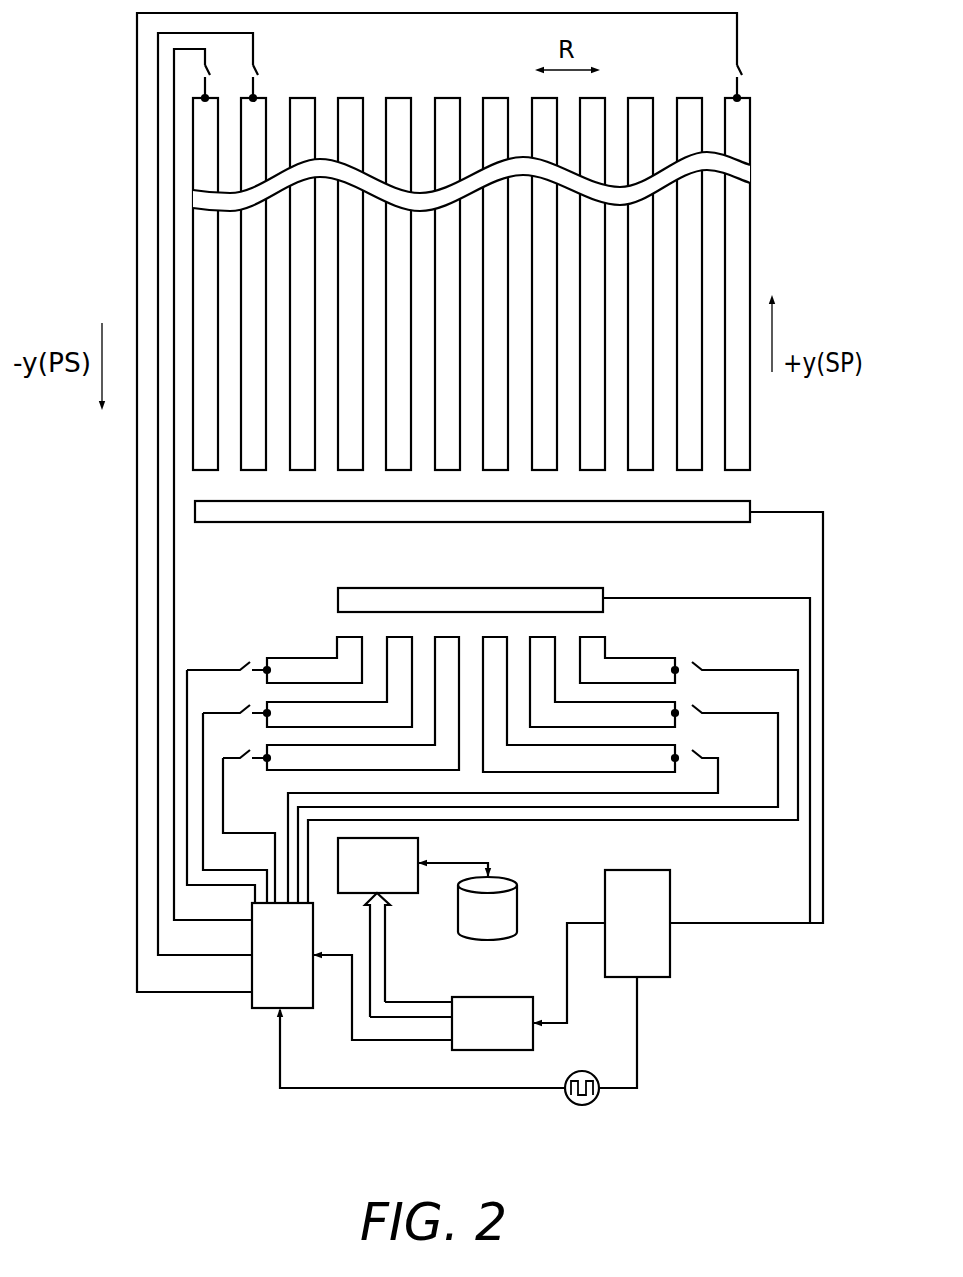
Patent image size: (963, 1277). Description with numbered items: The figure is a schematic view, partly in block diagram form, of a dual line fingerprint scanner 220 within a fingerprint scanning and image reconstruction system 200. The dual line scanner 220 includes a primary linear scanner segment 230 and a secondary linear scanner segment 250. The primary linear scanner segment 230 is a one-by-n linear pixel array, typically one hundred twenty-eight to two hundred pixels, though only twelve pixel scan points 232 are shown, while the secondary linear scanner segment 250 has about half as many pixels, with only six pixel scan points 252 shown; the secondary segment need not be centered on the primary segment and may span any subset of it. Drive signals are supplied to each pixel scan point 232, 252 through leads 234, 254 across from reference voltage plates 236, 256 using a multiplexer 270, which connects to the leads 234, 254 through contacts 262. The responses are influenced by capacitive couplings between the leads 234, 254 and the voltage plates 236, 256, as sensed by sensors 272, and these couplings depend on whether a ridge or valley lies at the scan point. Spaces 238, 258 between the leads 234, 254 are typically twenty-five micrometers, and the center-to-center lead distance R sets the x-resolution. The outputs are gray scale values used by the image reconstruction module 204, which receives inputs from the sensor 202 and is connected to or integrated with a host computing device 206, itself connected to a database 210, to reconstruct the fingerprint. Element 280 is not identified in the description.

The fingerprint scanning and image reconstruction system 200 is at (378, 1080).
The sensor 202 is at (512, 1036).
The image reconstruction module 204 is at (552, 880).
The host computing device 206 is at (398, 880).
The database 210 is at (507, 934).
The dual line fingerprint scanner 220 is at (235, 583).
The primary linear scanner segment 230 is at (333, 540).
The pixel scan points 232 is at (455, 482).
The leads 234 is at (442, 269).
The reference voltage plate 236 is at (695, 512).
The spaces 238 is at (472, 106).
The secondary linear scanner segment 250 is at (537, 727).
The pixel scan points 252 is at (501, 658).
The leads 254 is at (320, 667).
The reference voltage plate 256 is at (570, 588).
The spaces 258 is at (474, 632).
The contacts 262 is at (205, 98).
The multiplexer 270 is at (303, 974).
The sensors 272 is at (657, 940).
The clock generator 280 is at (590, 1106).